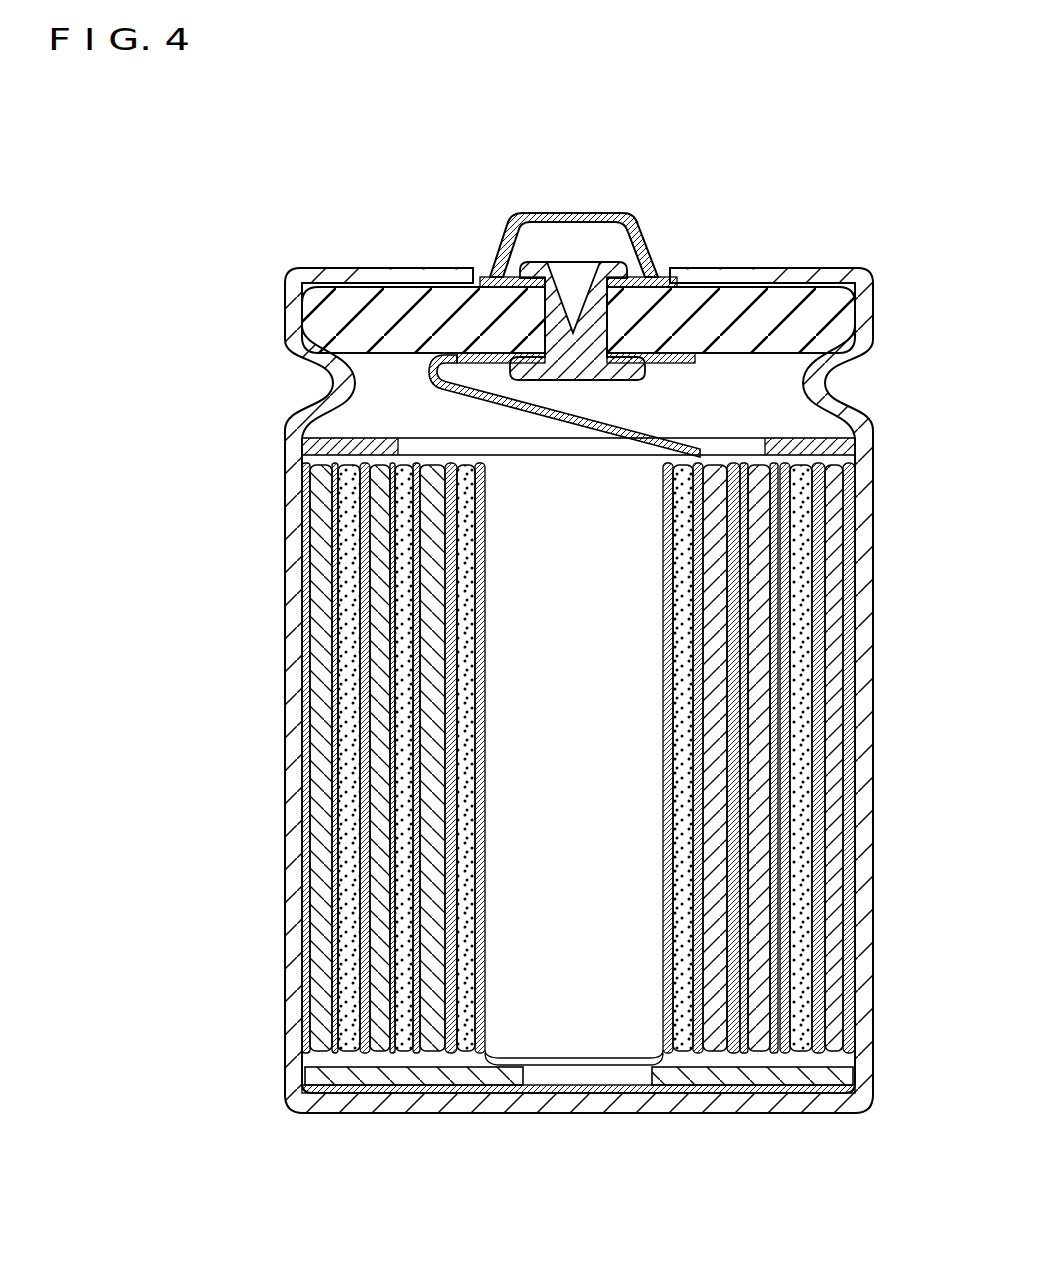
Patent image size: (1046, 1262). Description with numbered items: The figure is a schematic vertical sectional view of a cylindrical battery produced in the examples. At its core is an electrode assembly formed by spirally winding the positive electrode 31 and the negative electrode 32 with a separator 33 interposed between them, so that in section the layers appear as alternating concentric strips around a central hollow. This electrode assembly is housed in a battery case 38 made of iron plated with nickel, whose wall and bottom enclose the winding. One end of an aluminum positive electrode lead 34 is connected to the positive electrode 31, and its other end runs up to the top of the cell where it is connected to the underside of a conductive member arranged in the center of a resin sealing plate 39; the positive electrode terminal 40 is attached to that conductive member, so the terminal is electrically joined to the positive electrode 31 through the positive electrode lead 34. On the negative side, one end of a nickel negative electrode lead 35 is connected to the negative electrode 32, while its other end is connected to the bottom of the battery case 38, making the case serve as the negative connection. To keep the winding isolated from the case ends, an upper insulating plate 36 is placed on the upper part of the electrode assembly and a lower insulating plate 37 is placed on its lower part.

The positive electrode 31 is at (807, 853).
The negative electrode 32 is at (843, 773).
The separator 33 is at (856, 675).
The positive electrode lead 34 is at (628, 430).
The negative electrode lead 35 is at (613, 1090).
The upper insulating plate 36 is at (856, 446).
The lower insulating plate 37 is at (843, 1077).
The battery case 38 is at (300, 598).
The sealing plate 39 is at (318, 312).
The positive electrode terminal 40 is at (583, 213).